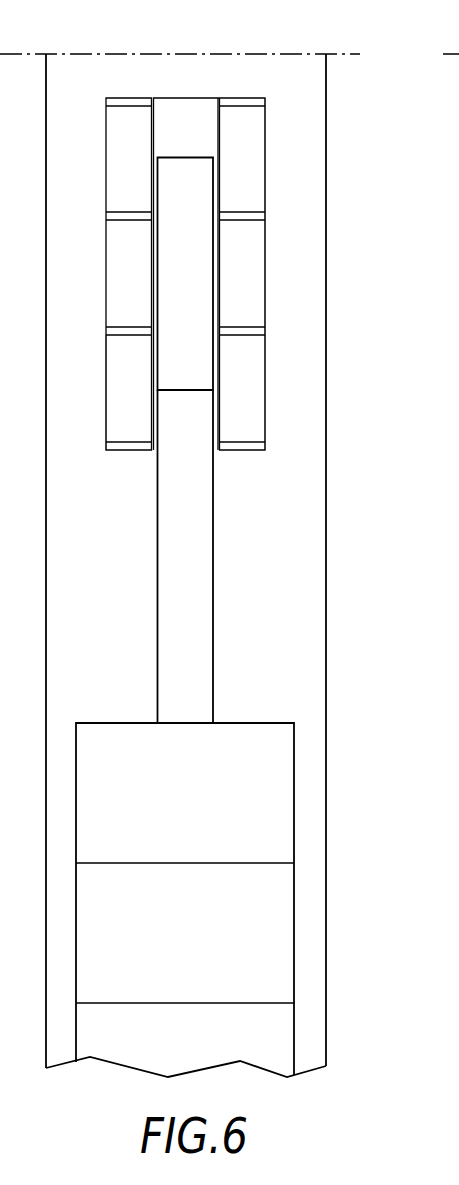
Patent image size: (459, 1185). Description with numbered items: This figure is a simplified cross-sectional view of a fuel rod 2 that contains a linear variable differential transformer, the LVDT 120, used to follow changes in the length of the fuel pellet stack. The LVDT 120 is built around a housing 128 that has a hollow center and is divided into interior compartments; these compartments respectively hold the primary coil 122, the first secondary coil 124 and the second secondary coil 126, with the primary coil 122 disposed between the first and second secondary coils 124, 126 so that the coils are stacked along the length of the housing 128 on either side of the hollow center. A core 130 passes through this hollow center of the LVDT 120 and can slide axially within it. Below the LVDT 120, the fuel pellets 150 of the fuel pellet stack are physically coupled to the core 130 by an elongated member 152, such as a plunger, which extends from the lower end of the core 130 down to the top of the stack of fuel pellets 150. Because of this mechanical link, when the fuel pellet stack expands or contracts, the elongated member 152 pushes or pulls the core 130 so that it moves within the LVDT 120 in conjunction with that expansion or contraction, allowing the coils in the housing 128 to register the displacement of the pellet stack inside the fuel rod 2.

The fuel rod 2 is at (327, 397).
The LVDT 120 is at (186, 225).
The primary coil 122 is at (114, 258).
The first secondary coil 124 is at (106, 130).
The second secondary coil 126 is at (117, 376).
The housing 128 is at (267, 203).
The core 130 is at (192, 182).
The fuel pellets 150 is at (264, 735).
The elongated member 152 is at (195, 556).